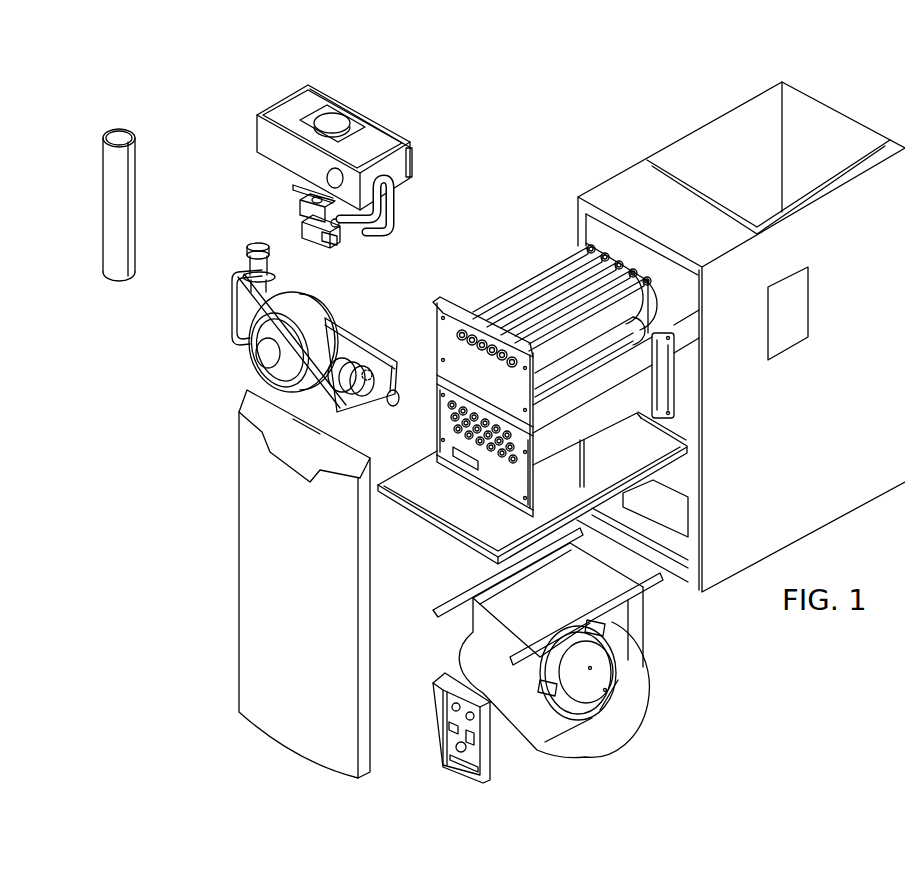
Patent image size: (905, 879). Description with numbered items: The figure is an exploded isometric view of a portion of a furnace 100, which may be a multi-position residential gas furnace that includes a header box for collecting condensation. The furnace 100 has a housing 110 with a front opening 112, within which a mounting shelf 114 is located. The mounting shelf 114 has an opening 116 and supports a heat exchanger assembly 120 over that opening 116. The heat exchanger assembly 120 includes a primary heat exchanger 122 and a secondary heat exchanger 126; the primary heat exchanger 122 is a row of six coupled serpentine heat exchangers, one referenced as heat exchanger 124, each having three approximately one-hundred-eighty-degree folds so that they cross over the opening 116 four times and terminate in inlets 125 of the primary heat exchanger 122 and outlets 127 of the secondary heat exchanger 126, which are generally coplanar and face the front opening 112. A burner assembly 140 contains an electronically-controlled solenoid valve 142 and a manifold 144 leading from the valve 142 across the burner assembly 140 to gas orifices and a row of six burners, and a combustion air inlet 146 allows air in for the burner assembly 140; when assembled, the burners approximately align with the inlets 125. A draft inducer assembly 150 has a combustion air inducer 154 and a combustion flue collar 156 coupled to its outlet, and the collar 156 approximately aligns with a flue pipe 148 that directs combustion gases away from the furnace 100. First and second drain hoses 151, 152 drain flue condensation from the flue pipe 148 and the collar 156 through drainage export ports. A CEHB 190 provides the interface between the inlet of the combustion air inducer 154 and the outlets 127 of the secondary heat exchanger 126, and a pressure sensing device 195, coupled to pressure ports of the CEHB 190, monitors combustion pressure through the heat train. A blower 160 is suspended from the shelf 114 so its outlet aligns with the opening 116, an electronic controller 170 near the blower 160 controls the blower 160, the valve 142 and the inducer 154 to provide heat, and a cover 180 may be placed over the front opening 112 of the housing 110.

The furnace 100 is at (860, 82).
The housing 110 is at (801, 430).
The front opening 112 is at (578, 226).
The mounting shelf 114 is at (438, 526).
The opening 116 is at (594, 466).
The heat exchanger assembly 120 is at (642, 383).
The primary heat exchanger 122 is at (499, 266).
The heat exchanger 124 is at (541, 275).
The inlets 125 is at (453, 322).
The secondary heat exchanger 126 is at (566, 456).
The outlets 127 is at (500, 458).
The burner assembly 140 is at (412, 165).
The solenoid valve 142 is at (300, 207).
The manifold 144 is at (397, 212).
The combustion air inlet 146 is at (258, 128).
The flue pipe 148 is at (103, 207).
The draft inducer assembly 150 is at (276, 262).
The first drain hose 151 is at (232, 299).
The second drain hose 152 is at (358, 406).
The combustion air inducer 154 is at (262, 360).
The combustion flue collar 156 is at (245, 251).
The blower 160 is at (642, 645).
The electronic controller 170 is at (443, 748).
The cover 180 is at (281, 613).
The CEHB 190 is at (357, 338).
The pressure sensing device 195 is at (387, 353).